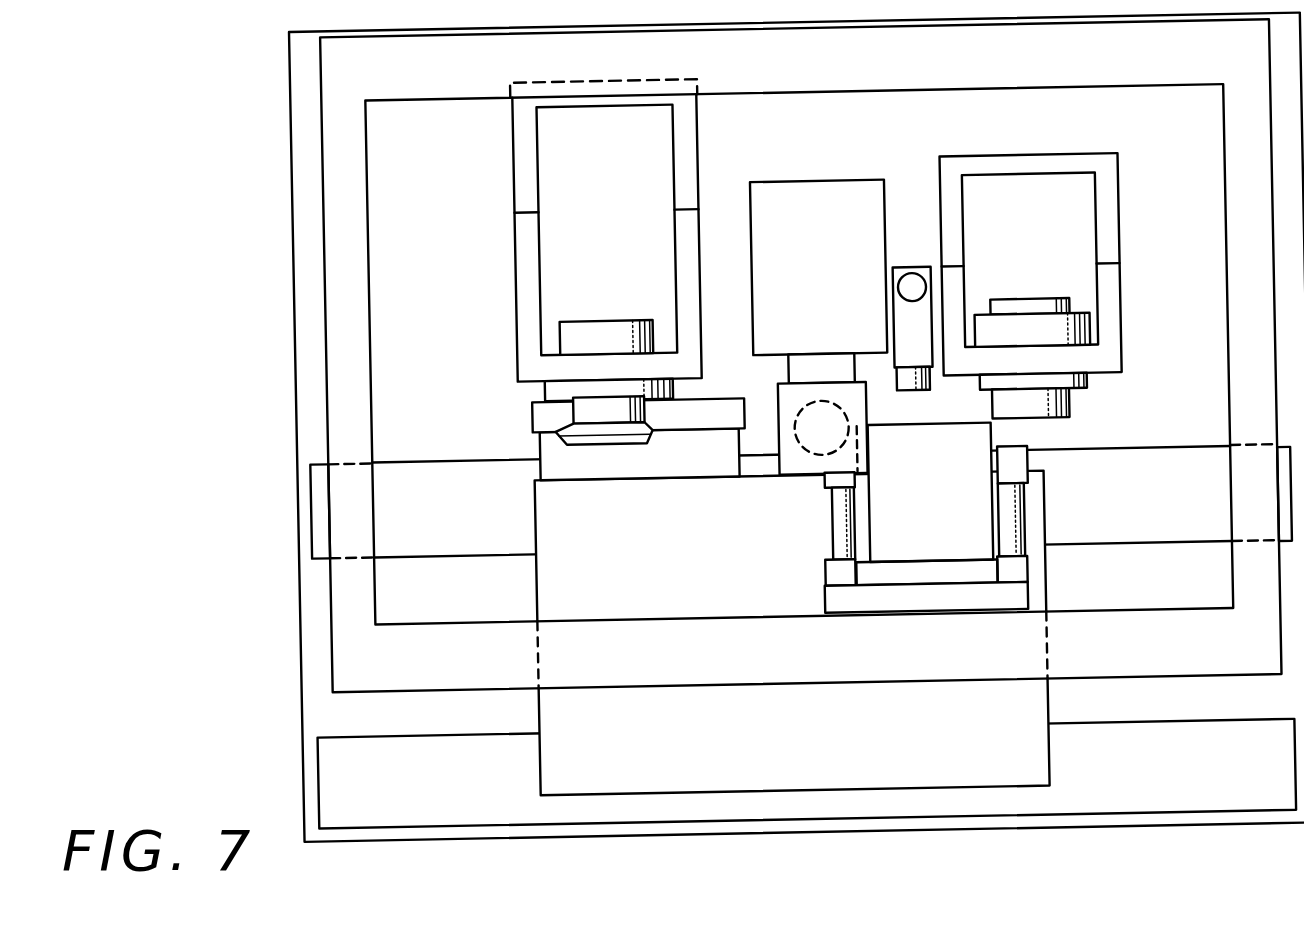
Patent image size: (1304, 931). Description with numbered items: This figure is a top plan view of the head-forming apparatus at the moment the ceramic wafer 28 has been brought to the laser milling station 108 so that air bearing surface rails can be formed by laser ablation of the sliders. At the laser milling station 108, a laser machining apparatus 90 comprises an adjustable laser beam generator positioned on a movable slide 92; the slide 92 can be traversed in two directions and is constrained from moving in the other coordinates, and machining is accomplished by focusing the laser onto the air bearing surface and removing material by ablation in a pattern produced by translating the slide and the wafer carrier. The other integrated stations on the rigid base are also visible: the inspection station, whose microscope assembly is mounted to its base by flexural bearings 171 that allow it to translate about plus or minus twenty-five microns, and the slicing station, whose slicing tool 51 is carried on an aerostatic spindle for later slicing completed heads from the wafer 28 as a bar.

The laser milling station 108 is at (655, 66).
The laser machining apparatus 90 is at (912, 297).
The movable slide 92 is at (875, 279).
The flexural bearings 171 is at (820, 328).
The slicing tool 51 is at (559, 436).
The ceramic wafer 28 is at (931, 492).